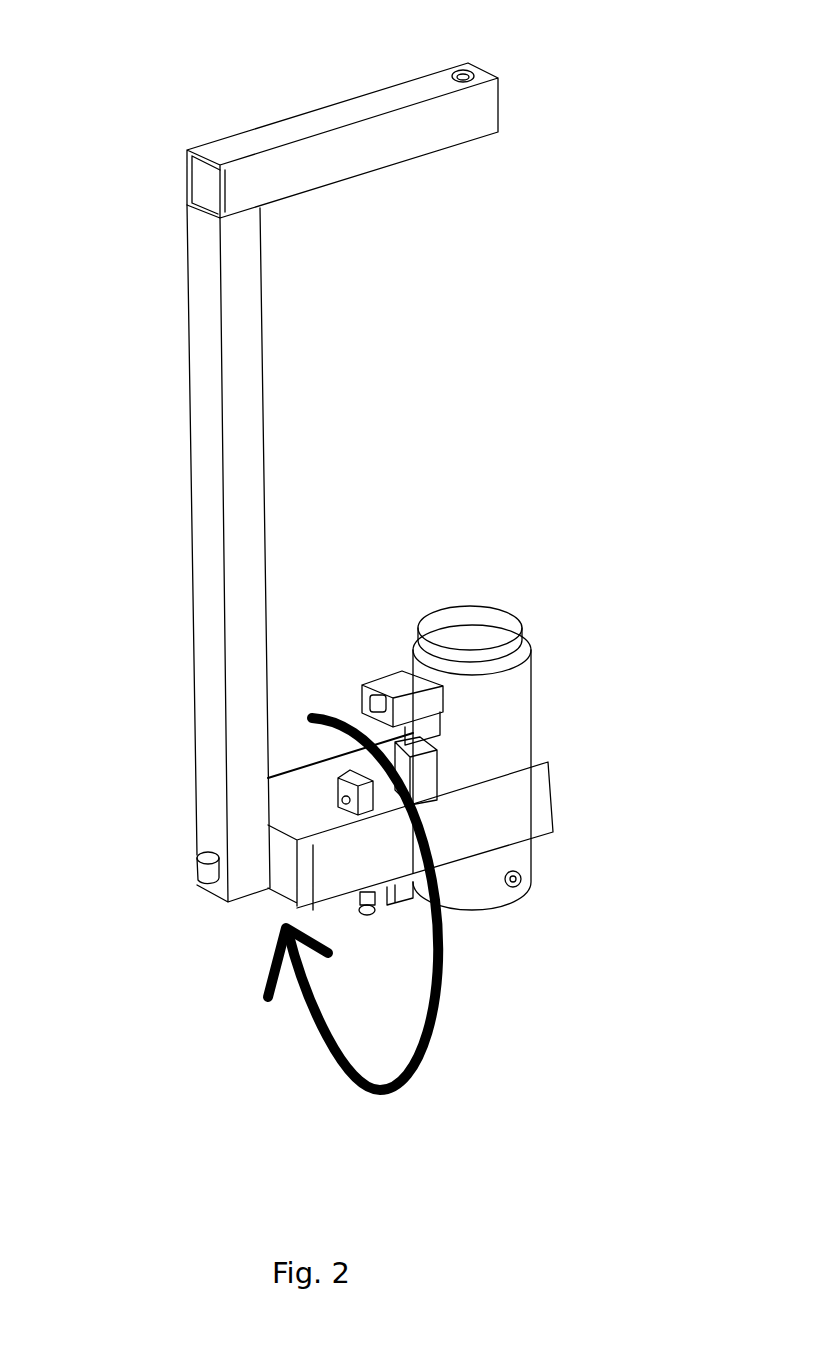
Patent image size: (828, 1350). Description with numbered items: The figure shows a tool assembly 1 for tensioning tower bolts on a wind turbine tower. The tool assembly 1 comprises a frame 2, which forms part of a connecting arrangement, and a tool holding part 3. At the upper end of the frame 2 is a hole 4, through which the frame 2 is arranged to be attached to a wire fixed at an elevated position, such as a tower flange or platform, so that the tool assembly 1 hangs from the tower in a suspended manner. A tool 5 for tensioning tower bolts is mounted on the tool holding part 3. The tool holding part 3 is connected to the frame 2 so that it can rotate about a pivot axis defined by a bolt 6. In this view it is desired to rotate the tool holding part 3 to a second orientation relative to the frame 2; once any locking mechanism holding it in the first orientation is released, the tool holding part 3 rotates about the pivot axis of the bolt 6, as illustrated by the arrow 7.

The tool assembly 1 is at (540, 428).
The frame 2 is at (435, 137).
The tool holding part 3 is at (507, 817).
The hole 4 is at (457, 74).
The tool 5 is at (502, 703).
The bolt 6 is at (196, 873).
The arrow 7 is at (445, 982).